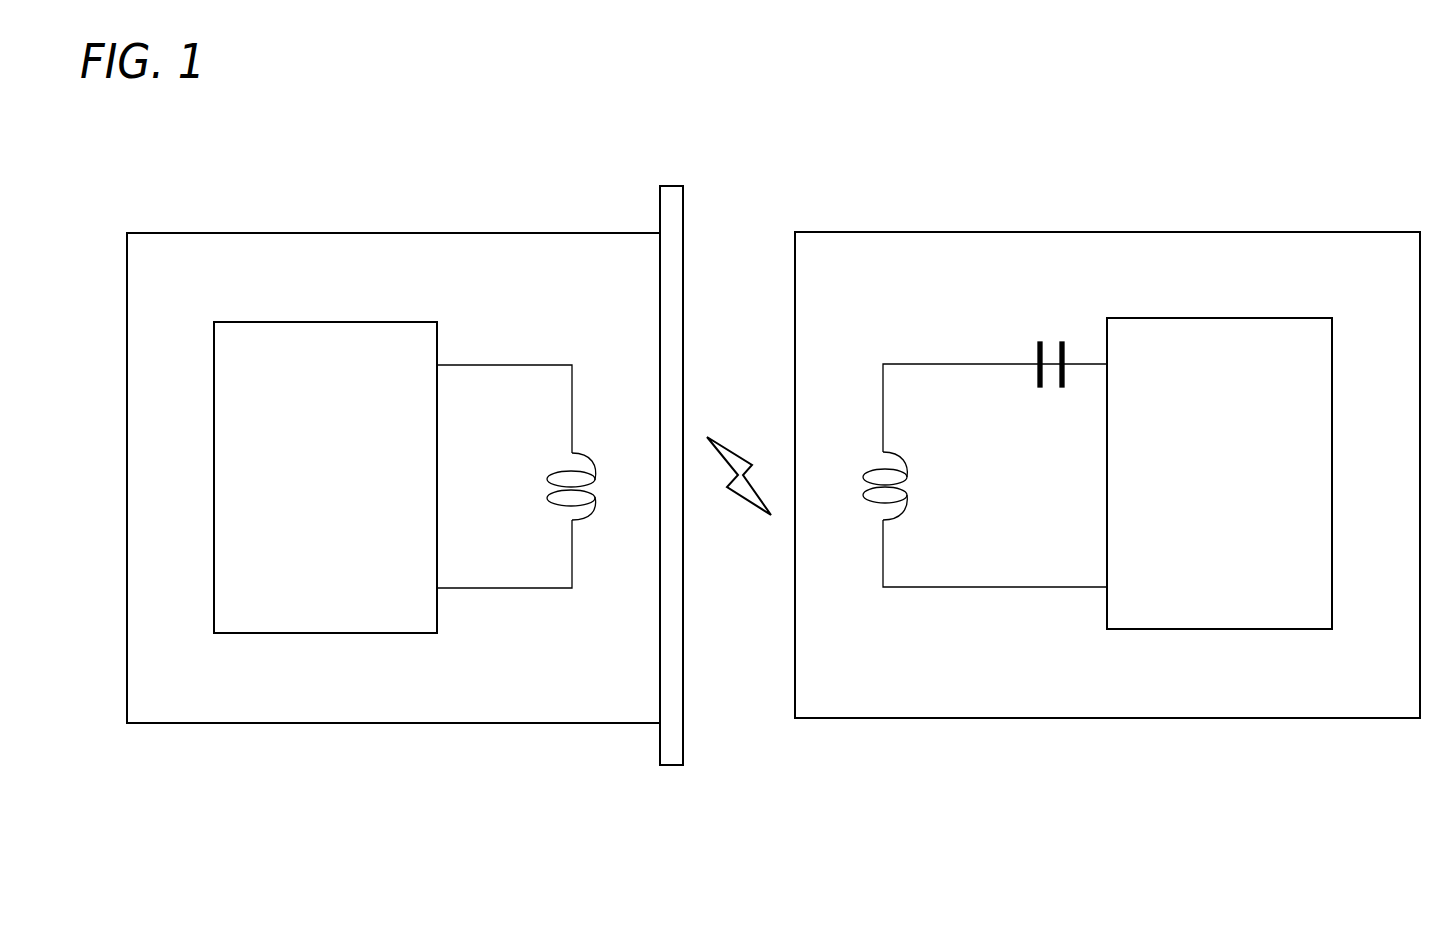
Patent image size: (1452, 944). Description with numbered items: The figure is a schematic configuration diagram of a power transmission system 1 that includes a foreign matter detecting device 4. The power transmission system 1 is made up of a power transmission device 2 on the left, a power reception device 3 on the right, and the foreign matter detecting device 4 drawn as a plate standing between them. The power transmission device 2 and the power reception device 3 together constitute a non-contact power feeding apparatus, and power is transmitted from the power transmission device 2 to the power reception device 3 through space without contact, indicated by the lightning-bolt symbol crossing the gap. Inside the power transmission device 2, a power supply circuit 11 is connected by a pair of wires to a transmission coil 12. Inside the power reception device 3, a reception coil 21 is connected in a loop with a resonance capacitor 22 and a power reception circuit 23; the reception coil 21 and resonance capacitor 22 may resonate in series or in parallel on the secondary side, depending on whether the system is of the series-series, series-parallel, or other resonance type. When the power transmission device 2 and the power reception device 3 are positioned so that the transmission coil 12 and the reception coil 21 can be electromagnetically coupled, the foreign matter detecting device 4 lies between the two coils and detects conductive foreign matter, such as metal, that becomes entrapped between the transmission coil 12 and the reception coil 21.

The power transmission system 1 is at (1248, 817).
The power transmission device 2 is at (527, 723).
The power reception device 3 is at (1287, 718).
The foreign matter detecting device 4 is at (683, 743).
The power supply circuit 11 is at (260, 633).
The transmission coil 12 is at (592, 522).
The reception coil 21 is at (862, 507).
The resonance capacitor 22 is at (1052, 338).
The power reception circuit 23 is at (1286, 630).